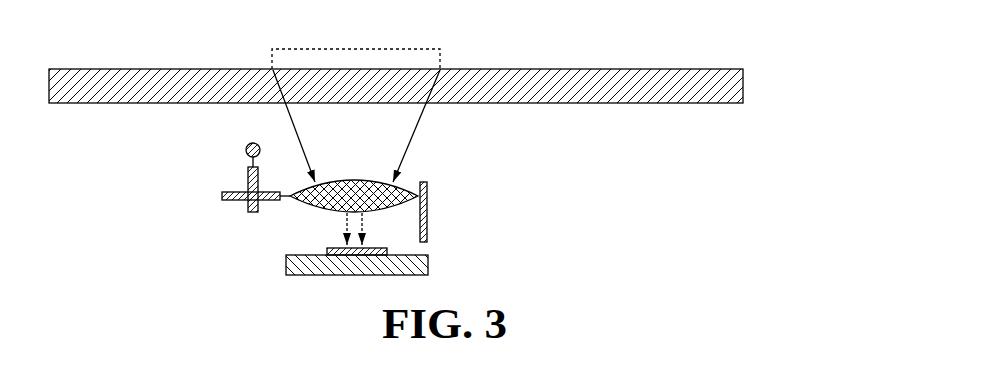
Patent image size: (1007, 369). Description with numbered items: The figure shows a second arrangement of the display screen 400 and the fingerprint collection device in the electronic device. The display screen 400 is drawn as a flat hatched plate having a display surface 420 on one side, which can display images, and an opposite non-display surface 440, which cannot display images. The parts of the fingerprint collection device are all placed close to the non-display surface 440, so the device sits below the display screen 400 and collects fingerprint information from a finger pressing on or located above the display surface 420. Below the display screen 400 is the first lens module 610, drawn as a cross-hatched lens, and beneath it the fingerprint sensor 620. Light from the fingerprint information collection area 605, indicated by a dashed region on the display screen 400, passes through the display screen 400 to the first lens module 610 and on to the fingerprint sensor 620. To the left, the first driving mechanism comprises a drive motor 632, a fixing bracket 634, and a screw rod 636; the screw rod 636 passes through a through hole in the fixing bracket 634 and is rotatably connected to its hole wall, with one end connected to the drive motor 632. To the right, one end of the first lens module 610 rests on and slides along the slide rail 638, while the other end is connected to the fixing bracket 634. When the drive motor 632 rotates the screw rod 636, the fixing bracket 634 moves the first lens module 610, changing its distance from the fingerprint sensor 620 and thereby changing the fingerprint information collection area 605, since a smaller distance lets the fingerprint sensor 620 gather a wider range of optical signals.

The display screen 400 is at (444, 81).
The display surface 420 is at (712, 69).
The non-display surface 440 is at (415, 115).
The fingerprint information collection area 605 is at (415, 55).
The first lens module 610 is at (405, 185).
The fingerprint sensor 620 is at (425, 265).
The drive motor 632 is at (246, 148).
The fixing bracket 634 is at (222, 193).
The screw rod 636 is at (253, 212).
The slide rail 638 is at (428, 210).